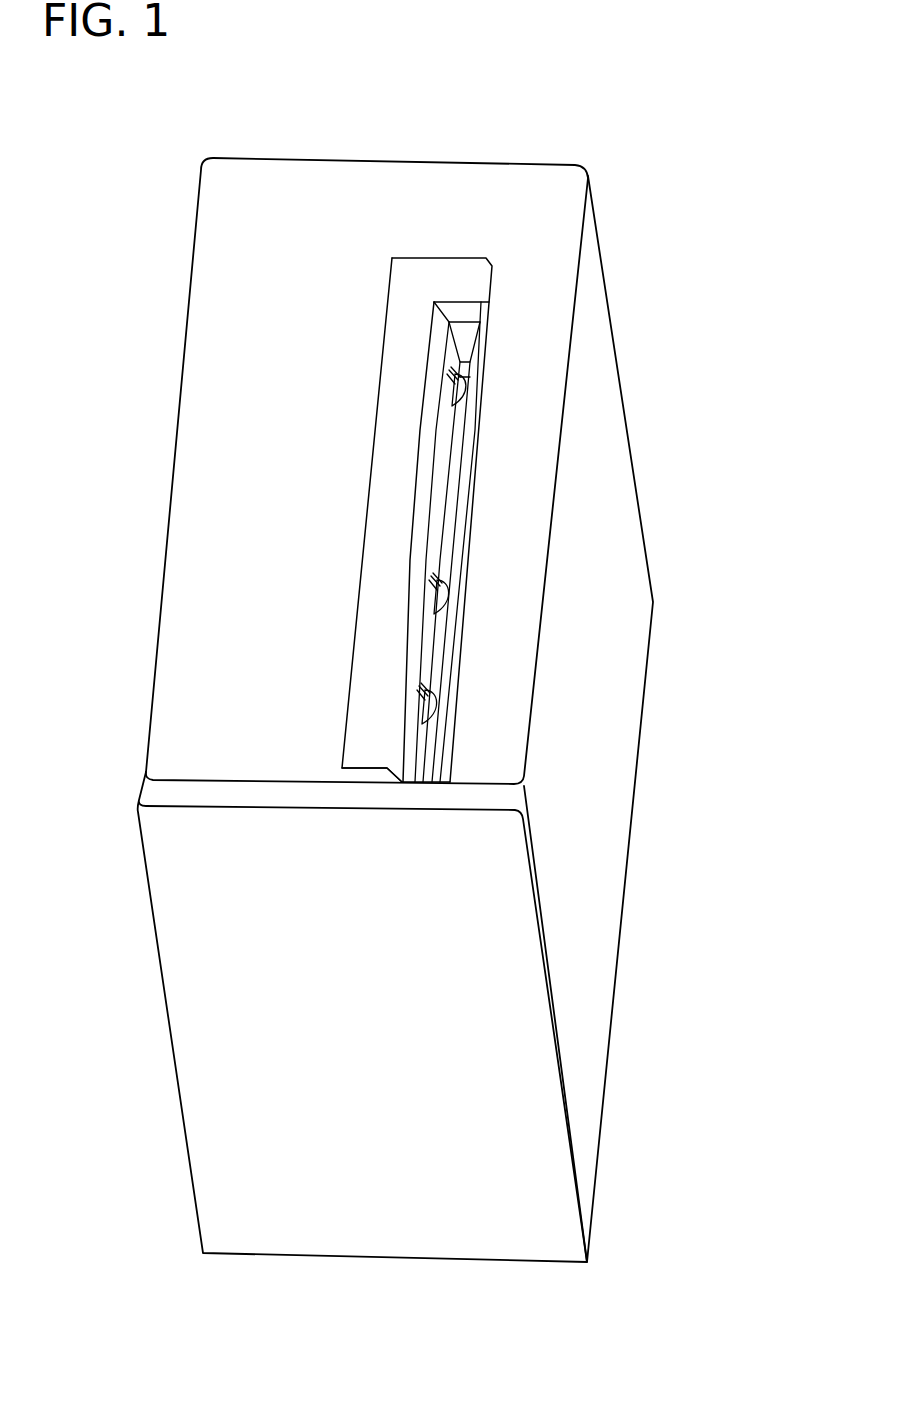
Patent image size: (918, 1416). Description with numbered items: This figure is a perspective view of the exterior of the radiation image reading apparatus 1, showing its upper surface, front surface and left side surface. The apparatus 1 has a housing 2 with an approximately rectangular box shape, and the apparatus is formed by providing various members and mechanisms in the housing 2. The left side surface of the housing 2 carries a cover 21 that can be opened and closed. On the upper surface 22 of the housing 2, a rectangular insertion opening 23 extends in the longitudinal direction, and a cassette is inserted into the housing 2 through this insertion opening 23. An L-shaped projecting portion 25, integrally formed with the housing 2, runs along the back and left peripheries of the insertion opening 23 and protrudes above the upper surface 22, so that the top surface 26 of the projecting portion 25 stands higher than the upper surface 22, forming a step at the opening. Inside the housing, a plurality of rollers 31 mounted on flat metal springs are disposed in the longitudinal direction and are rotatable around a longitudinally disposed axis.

The radiation image reading apparatus 1 is at (619, 153).
The housing 2 is at (595, 442).
The cover 21 is at (200, 1034).
The upper surface 22 is at (353, 183).
The insertion opening 23 is at (460, 420).
The projecting portion 25 is at (360, 780).
The top surface 26 is at (362, 677).
The rollers 31 is at (468, 388).